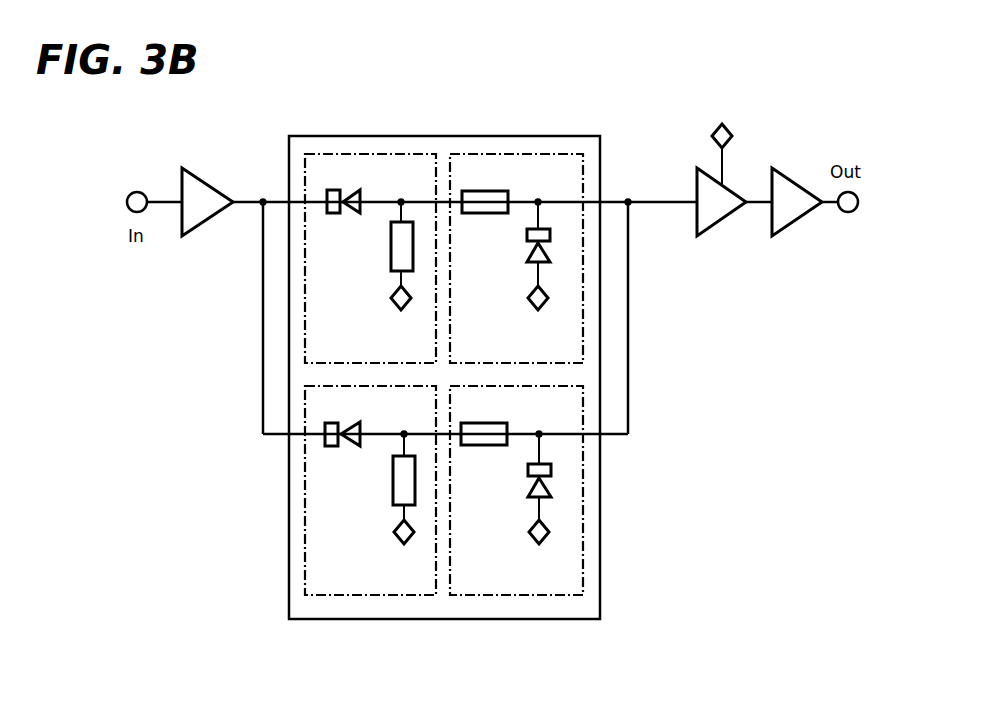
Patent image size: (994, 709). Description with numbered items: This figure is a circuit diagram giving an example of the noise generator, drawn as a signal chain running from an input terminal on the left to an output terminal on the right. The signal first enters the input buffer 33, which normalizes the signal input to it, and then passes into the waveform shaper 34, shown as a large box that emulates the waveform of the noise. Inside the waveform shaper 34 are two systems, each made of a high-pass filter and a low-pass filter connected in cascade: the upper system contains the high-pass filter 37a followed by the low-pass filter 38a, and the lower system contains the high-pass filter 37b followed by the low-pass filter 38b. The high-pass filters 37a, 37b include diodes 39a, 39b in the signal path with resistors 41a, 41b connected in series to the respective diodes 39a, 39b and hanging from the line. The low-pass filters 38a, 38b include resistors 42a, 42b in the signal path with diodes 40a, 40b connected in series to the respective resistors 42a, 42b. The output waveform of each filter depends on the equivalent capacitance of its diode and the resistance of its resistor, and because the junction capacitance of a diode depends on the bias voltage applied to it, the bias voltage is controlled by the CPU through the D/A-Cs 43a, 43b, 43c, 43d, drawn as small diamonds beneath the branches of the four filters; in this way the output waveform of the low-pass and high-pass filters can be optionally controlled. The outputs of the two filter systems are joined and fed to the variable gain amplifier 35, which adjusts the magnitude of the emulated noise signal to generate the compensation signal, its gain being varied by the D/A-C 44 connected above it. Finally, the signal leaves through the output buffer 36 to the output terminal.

The input buffer 33 is at (203, 238).
The waveform shaper 34 is at (575, 137).
The variable gain amplifier 35 is at (720, 238).
The output buffer 36 is at (797, 224).
The high-pass filter 37a is at (363, 155).
The high-pass filter 37b is at (370, 598).
The low-pass filter 38a is at (500, 155).
The low-pass filter 38b is at (517, 598).
The diode 39a is at (350, 215).
The diode 39b is at (352, 448).
The diode 40a is at (526, 257).
The diode 40b is at (527, 494).
The resistor 41a is at (390, 255).
The resistor 41b is at (393, 490).
The resistor 42a is at (476, 214).
The resistor 42b is at (480, 446).
The D/A-C 43a is at (401, 311).
The D/A-C 43b is at (538, 311).
The D/A-C 43c is at (404, 545).
The D/A-C 43d is at (539, 545).
The D/A-C 44 is at (761, 155).